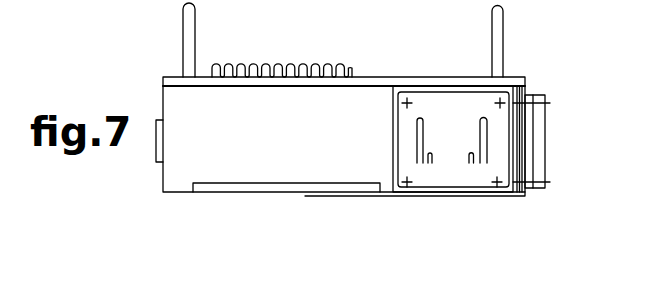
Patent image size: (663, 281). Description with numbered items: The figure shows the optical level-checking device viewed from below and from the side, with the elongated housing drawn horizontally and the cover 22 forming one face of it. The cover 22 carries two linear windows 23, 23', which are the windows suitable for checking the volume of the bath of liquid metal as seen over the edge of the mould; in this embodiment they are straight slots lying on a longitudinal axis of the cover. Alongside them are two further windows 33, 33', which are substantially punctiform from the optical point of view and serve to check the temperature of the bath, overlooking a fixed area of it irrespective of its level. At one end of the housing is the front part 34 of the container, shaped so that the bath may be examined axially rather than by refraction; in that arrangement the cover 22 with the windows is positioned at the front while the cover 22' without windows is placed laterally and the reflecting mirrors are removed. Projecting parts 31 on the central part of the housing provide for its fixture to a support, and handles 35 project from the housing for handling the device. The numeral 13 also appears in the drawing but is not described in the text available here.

The base 13 is at (315, 198).
The cover 22 is at (453, 100).
The cover without windows 22' is at (561, 141).
The window 23 is at (389, 183).
The window 23' is at (538, 140).
The projecting parts 31 is at (250, 186).
The window 33 is at (419, 201).
The window 33' is at (474, 201).
The front part of the container 34 is at (544, 98).
The handles 35 is at (188, 40).